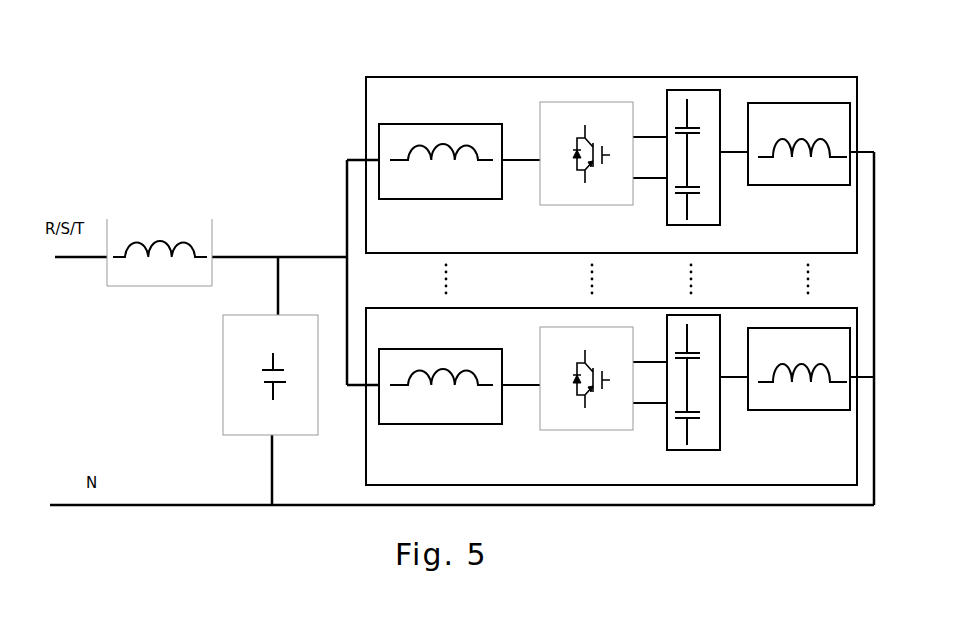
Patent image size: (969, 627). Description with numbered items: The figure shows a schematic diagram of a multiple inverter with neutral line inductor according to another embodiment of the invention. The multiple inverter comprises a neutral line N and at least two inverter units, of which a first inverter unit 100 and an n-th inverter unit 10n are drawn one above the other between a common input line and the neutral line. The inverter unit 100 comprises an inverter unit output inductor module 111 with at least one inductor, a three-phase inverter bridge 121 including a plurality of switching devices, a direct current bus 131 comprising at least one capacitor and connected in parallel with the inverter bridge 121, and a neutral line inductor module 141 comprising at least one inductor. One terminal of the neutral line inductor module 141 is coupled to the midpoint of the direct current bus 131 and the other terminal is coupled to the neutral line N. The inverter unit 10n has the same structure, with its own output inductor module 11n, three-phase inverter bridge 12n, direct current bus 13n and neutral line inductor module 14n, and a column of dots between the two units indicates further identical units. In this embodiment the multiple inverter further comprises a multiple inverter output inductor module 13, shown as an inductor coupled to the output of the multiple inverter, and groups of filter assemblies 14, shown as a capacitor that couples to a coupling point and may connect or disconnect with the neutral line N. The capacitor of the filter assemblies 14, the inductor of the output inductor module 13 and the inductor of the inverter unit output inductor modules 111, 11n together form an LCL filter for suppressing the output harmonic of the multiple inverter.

The inverter unit 100 is at (577, 77).
The inverter unit 10n is at (577, 308).
The inverter unit output inductor module 111 is at (407, 199).
The three-phase inverter bridge 121 is at (605, 205).
The direct current bus 131 is at (693, 225).
The neutral line inductor module 141 is at (775, 185).
The inverter unit output inductor module 11n is at (440, 404).
The three-phase inverter bridge 12n is at (586, 391).
The direct current bus 13n is at (701, 396).
The neutral line inductor module 14n is at (799, 387).
The multiple inverter output inductor module 13 is at (155, 219).
The filter assemblies 14 is at (215, 375).